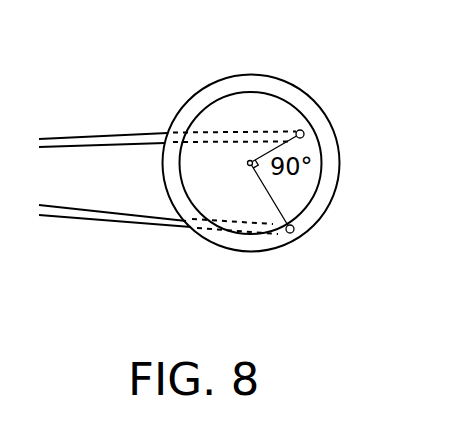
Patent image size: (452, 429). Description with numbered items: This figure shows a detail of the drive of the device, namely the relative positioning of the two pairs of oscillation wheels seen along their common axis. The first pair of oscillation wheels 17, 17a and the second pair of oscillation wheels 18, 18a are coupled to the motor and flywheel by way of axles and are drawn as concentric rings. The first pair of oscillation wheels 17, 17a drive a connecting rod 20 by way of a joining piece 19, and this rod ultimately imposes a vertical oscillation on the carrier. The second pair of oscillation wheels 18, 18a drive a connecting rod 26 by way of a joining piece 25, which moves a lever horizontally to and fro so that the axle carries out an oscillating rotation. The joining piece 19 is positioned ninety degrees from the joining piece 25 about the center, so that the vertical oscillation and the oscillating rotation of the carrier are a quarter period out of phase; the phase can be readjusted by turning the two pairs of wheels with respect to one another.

The oscillation wheel 18 is at (241, 141).
The oscillation wheel 18a is at (212, 93).
The oscillation wheel 17 is at (256, 132).
The oscillation wheel 17a is at (262, 108).
The joining piece 19 is at (303, 130).
The connecting rod 20 is at (83, 142).
The joining piece 25 is at (292, 235).
The connecting rod 26 is at (88, 212).